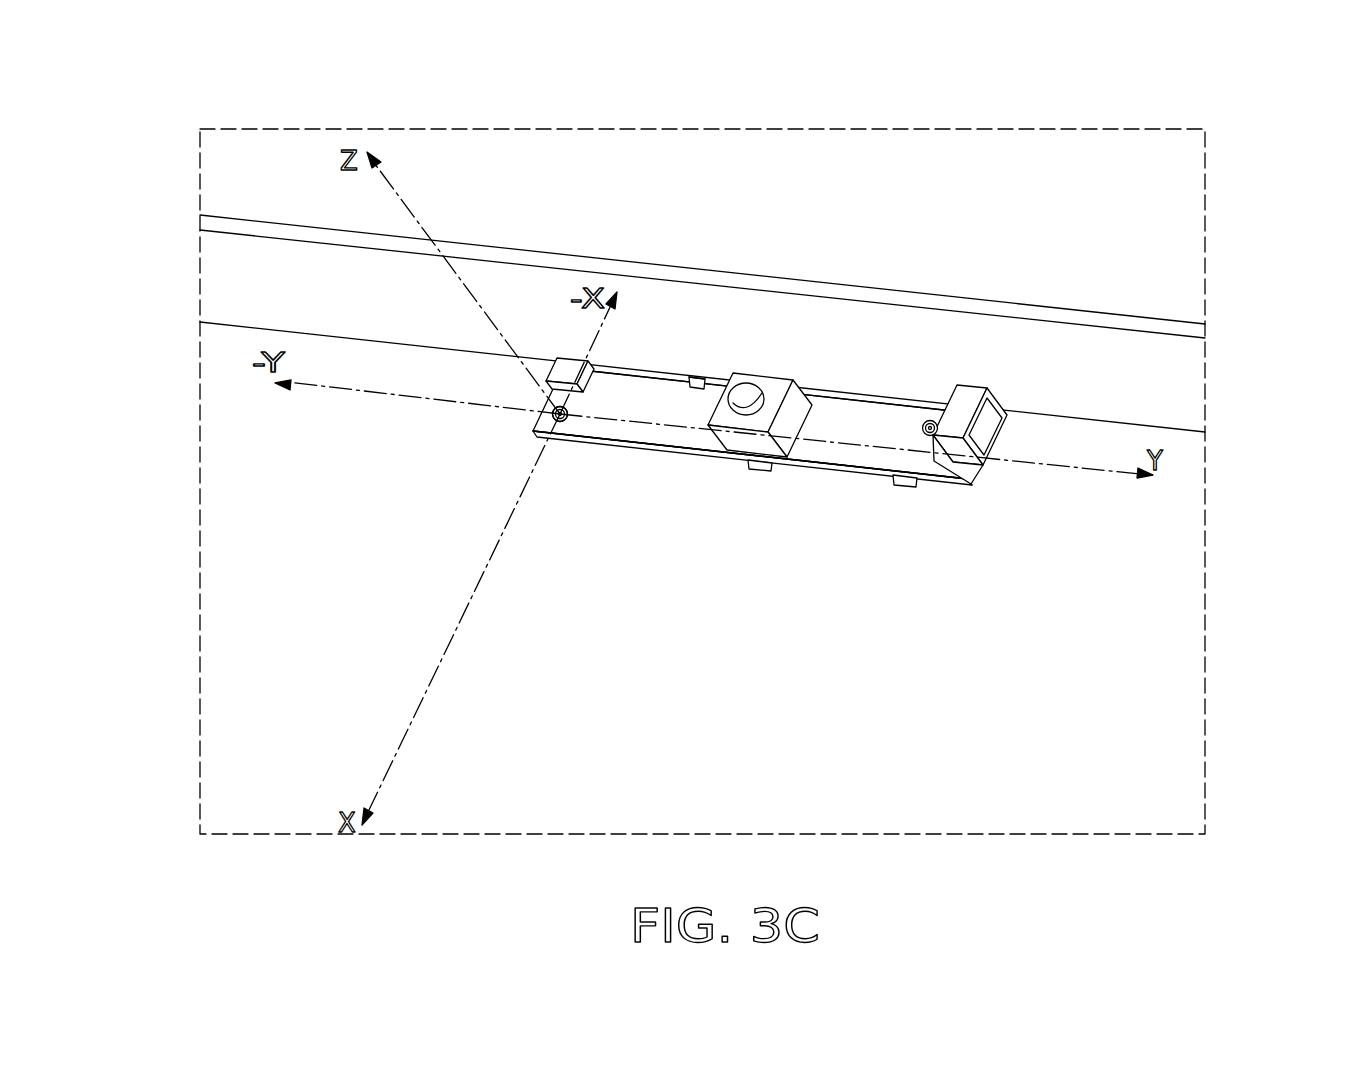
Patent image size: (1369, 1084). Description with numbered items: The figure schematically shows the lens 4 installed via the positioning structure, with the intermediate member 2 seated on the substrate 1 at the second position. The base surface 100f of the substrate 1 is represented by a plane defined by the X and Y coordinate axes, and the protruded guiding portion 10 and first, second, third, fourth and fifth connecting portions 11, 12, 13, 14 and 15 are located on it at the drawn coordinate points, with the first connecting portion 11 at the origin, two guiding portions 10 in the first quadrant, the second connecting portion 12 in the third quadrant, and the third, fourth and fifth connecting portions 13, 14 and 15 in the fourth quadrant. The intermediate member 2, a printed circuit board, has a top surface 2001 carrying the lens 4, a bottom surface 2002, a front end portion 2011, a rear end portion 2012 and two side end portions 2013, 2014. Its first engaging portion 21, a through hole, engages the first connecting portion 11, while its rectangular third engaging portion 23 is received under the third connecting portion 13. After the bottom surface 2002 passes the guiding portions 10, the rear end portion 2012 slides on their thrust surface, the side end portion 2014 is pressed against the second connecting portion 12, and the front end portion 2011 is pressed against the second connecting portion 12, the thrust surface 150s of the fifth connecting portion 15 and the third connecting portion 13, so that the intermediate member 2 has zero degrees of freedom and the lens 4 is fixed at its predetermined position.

The substrate 1 is at (1052, 300).
The intermediate member 2 is at (845, 381).
The lens 4 is at (741, 388).
The guiding portion 10 is at (753, 473).
The first connecting portion 11 is at (540, 391).
The second connecting portion 12 is at (561, 372).
The third connecting portion 13 is at (1149, 410).
The fourth connecting portion 14 is at (930, 421).
The fifth connecting portion 15 is at (683, 226).
The first engaging portion 21 is at (566, 409).
The third engaging portion 23 is at (985, 475).
The base surface 100f is at (247, 743).
The thrust surface 150s is at (722, 340).
The top surface 2001 is at (595, 433).
The bottom surface 2002 is at (648, 448).
The front end portion 2011 is at (877, 400).
The rear end portion 2012 is at (848, 468).
The side end portion 2013 is at (990, 457).
The side end portion 2014 is at (543, 399).